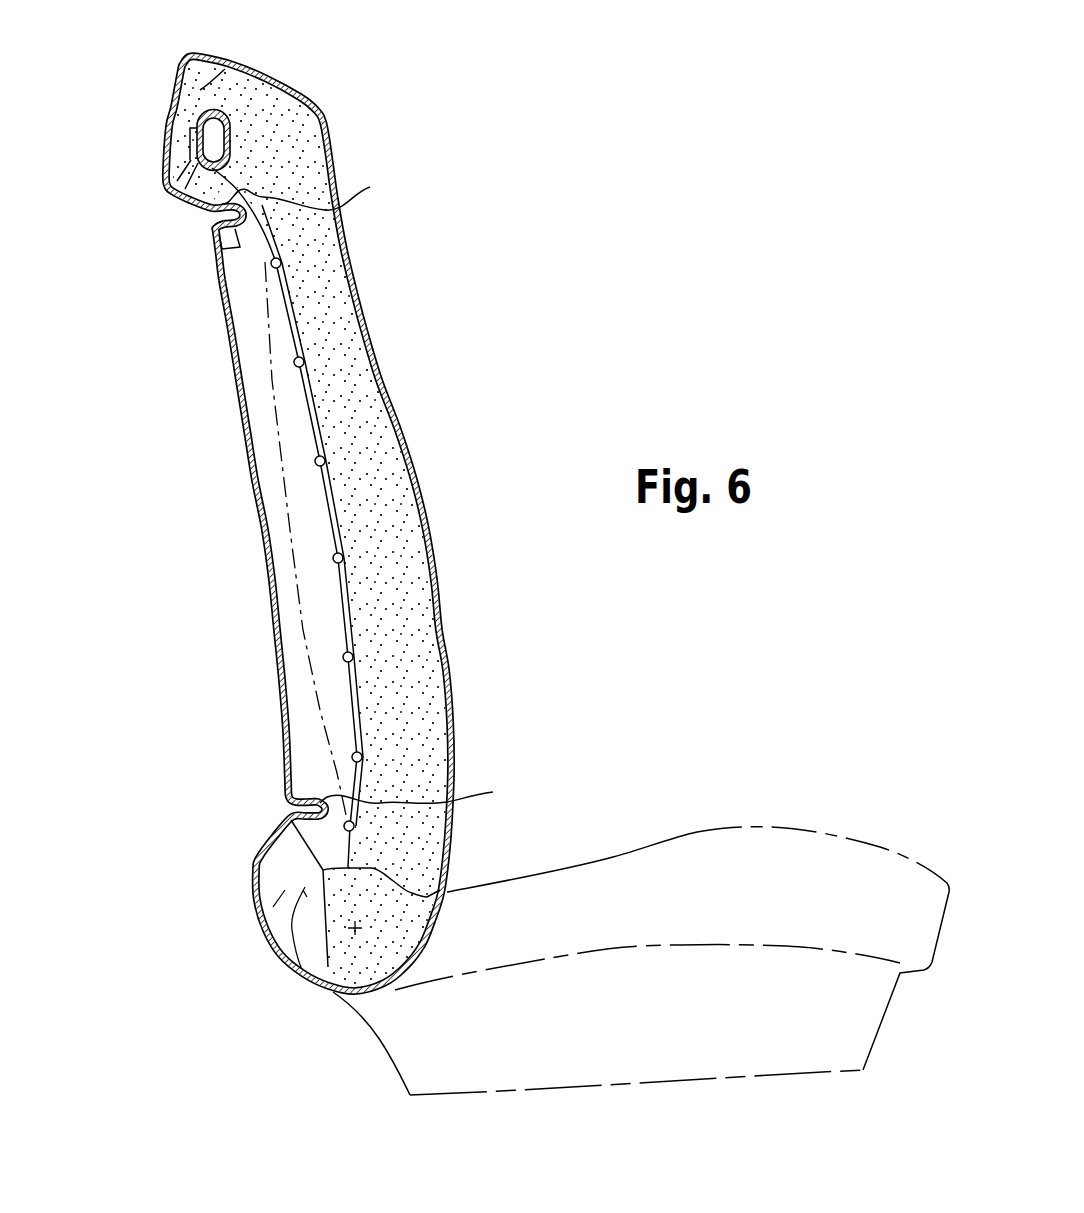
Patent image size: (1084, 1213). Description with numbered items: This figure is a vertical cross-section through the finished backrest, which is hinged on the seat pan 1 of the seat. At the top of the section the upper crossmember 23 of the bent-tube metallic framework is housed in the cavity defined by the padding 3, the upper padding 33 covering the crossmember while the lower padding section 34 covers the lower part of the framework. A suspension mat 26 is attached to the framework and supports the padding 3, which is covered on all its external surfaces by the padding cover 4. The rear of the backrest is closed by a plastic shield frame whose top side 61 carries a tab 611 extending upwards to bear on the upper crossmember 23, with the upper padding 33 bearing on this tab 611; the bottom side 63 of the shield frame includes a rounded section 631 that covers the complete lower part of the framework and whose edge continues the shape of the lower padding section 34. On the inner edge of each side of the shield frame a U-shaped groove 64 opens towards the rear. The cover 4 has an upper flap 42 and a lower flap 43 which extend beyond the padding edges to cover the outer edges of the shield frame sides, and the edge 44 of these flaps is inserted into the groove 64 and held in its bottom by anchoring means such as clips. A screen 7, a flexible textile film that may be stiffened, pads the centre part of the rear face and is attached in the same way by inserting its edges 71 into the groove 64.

The seat pan 1 is at (640, 870).
The padding 3 is at (365, 443).
The padding cover 4 is at (430, 548).
The screen 7 is at (268, 591).
The upper crossmember 23 is at (213, 127).
The suspension mat 26 is at (347, 652).
The upper padding 33 is at (232, 75).
The lower padding section 34 is at (372, 940).
The upper flap 42 is at (197, 202).
The lower flap 43 is at (276, 954).
The edge of the flaps 44 is at (238, 182).
The top side 61 is at (203, 219).
The bottom side 63 is at (285, 890).
The U-shaped groove 64 is at (378, 486).
The edges of the screen 71 is at (217, 247).
The tab 611 is at (170, 163).
The rounded section 631 is at (304, 973).